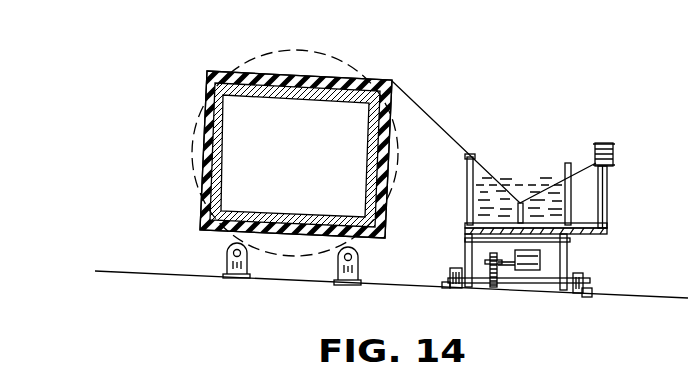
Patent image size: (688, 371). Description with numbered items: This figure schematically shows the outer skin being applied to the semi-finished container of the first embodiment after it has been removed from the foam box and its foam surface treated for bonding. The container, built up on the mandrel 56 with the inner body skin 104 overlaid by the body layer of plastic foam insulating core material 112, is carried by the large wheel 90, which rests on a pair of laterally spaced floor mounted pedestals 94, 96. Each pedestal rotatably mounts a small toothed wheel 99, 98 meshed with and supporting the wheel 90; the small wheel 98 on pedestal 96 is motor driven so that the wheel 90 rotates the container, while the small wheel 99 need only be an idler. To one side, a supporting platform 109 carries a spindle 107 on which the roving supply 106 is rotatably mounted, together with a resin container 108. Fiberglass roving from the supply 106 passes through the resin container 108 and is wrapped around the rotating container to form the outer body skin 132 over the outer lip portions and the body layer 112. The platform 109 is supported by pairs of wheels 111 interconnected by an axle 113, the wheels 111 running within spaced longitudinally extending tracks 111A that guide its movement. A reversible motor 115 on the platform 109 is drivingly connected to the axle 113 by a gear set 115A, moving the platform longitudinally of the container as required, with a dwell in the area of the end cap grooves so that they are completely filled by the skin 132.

The mandrel 56 is at (363, 118).
The wheel 90 is at (323, 57).
The pedestal 94 is at (228, 267).
The pedestal 96 is at (356, 268).
The small toothed wheel 98 is at (358, 252).
The small toothed wheel 99 is at (228, 248).
The inner body skin 104 is at (210, 182).
The roving supply 106 is at (614, 158).
The spindle 107 is at (607, 190).
The resin container 108 is at (467, 207).
The supporting platform 109 is at (568, 240).
The wheels 111 is at (457, 268).
The tracks 111A is at (445, 288).
The body layer of insulating core material 112 is at (207, 87).
The axle 113 is at (528, 282).
The reversible motor 115 is at (541, 262).
The gear set 115A is at (475, 248).
The outer body skin 132 is at (207, 137).